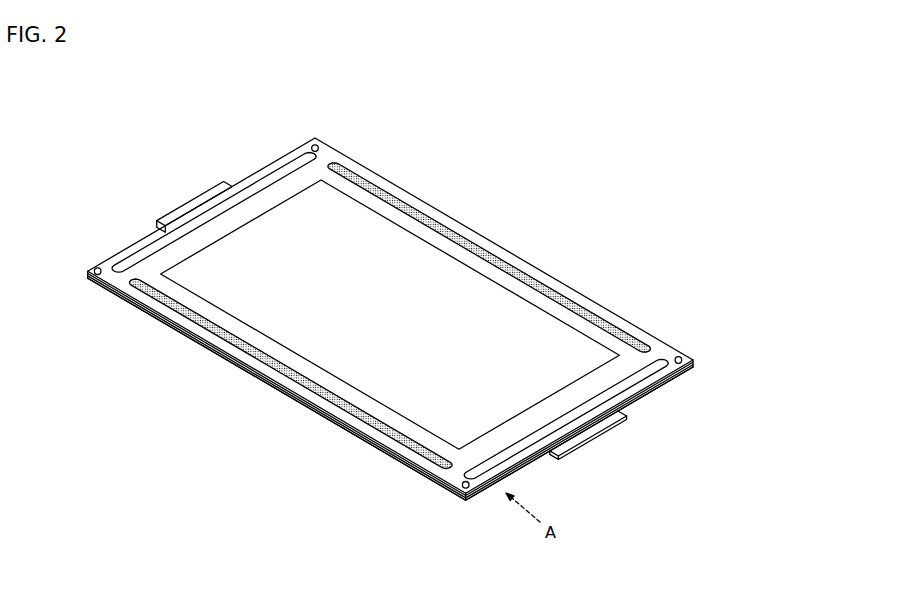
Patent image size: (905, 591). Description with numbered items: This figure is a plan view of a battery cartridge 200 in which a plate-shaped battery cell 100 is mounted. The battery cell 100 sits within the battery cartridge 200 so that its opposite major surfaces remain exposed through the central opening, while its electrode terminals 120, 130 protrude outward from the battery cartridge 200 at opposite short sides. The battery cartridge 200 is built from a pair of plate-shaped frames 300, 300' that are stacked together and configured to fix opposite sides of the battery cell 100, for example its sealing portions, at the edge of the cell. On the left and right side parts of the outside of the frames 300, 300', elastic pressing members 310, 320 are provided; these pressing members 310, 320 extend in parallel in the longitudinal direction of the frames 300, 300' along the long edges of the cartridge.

The battery cartridge 200 is at (42, 106).
The battery cell 100 is at (497, 321).
The electrode terminal 120 is at (192, 207).
The electrode terminal 130 is at (585, 433).
The plate-shaped frame 300 is at (390, 386).
The plate-shaped frame 300' is at (390, 389).
The elastic pressing member 310 is at (397, 203).
The elastic pressing member 320 is at (208, 331).